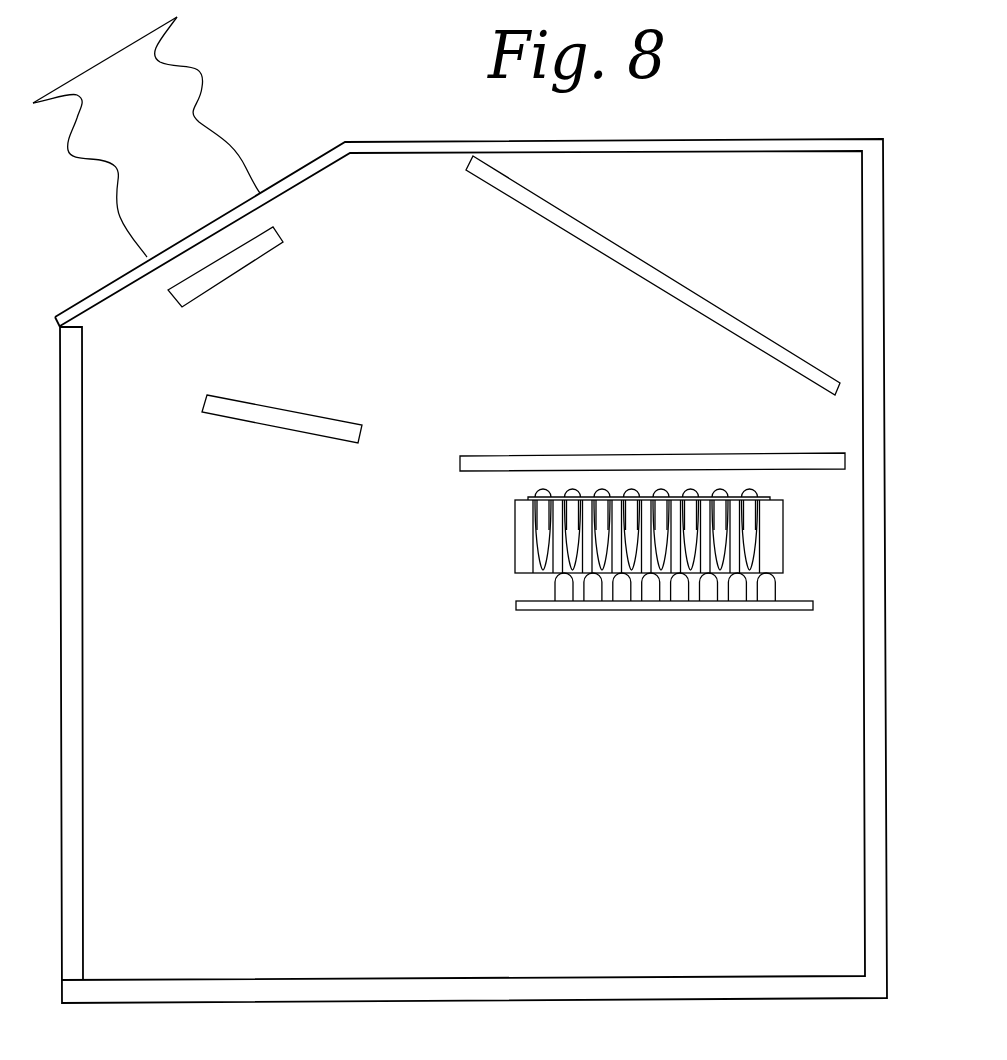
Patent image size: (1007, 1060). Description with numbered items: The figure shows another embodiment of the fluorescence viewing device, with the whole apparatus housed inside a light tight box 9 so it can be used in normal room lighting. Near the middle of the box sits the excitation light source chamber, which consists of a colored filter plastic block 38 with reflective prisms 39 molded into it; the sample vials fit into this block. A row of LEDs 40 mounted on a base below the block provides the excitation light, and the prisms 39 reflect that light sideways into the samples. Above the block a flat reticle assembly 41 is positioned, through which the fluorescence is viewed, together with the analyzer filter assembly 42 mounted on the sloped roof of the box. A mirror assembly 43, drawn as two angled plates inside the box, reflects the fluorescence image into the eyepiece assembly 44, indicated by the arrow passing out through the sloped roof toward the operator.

The light tight box 9 is at (884, 235).
The colored filter plastic block 38 is at (612, 535).
The reflective prisms 39 is at (531, 543).
The LEDs 40 is at (592, 596).
The reticle assembly 41 is at (563, 455).
The analyzer filter assembly 42 is at (250, 264).
The mirror assembly 43 is at (552, 223).
The eyepiece assembly 44 is at (202, 97).